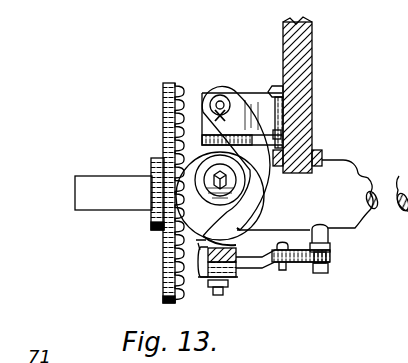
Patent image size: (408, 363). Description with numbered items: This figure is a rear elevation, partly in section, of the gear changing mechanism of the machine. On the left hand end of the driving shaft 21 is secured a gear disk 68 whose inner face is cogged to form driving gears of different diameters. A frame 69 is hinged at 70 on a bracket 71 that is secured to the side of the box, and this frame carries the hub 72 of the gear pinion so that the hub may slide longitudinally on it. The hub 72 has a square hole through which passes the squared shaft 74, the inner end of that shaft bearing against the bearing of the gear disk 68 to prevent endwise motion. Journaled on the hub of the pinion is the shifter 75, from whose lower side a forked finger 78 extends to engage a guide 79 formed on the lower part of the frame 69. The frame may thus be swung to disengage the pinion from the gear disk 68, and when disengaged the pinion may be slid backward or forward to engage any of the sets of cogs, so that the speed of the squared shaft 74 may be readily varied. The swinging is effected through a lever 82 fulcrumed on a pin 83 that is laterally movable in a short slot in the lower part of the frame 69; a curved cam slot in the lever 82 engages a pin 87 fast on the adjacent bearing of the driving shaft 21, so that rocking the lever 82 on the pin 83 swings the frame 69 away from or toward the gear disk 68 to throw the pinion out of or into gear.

The driving shaft 21 is at (76, 188).
The gear disk 68 is at (176, 253).
The frame 69 is at (224, 288).
The hinge 70 is at (222, 96).
The bracket 71 is at (296, 70).
The hub 72 is at (207, 184).
The squared shaft 74 is at (231, 183).
The shifter 75 is at (175, 208).
The forked finger 78 is at (173, 242).
The guide 79 is at (200, 245).
The lever 82 is at (297, 264).
The pin 83 is at (214, 288).
The pin 87 is at (330, 268).